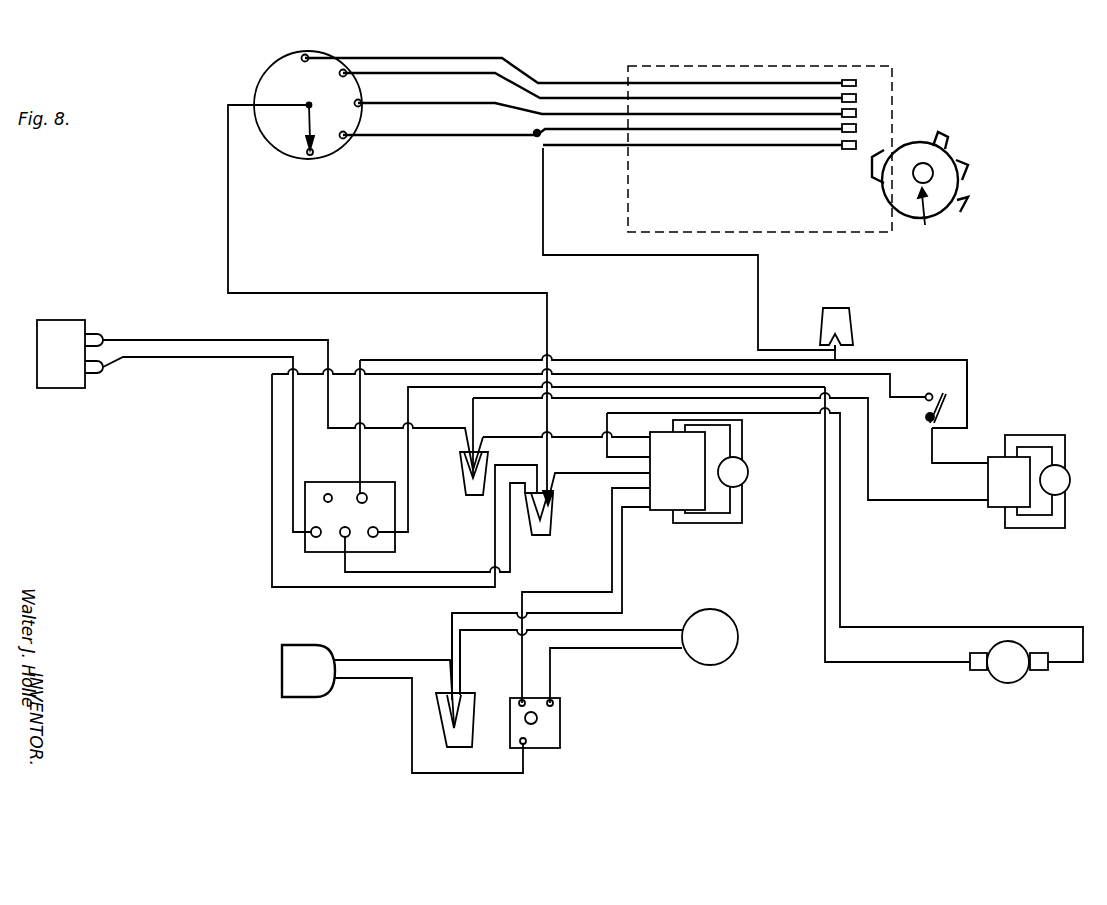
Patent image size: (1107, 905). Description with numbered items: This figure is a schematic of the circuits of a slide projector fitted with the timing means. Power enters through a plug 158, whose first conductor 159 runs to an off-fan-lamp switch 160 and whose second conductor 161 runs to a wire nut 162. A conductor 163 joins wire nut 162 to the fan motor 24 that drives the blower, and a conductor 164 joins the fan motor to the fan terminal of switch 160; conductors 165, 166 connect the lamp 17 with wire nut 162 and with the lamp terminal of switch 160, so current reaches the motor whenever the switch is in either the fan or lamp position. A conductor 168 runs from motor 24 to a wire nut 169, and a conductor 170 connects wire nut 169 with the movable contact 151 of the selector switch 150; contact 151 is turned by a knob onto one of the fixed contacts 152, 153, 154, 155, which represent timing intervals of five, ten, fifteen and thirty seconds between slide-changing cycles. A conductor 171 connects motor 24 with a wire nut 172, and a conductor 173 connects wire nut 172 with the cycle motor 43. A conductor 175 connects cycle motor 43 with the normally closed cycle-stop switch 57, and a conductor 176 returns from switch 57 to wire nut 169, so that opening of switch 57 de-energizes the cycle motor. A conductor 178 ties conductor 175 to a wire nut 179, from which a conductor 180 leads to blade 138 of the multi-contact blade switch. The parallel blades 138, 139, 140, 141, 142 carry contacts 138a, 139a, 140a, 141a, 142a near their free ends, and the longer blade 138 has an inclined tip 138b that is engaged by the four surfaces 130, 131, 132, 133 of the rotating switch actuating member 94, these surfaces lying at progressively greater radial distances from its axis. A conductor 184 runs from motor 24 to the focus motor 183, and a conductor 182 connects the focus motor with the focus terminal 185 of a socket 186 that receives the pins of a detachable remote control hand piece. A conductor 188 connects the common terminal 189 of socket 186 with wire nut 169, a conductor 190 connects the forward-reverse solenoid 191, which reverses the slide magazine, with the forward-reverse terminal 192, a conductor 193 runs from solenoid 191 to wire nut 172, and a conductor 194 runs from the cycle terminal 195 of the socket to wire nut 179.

The selector switch 150 is at (258, 78).
The movable contact 151 is at (302, 120).
The fixed contact 152 is at (350, 141).
The fixed contact 153 is at (364, 108).
The fixed contact 154 is at (350, 78).
The fixed contact 155 is at (305, 55).
The blade 138 is at (588, 150).
The blade 139 is at (532, 140).
The blade 140 is at (558, 112).
The blade 141 is at (597, 97).
The blade 142 is at (694, 81).
The contact 138a is at (860, 144).
The contact 139a is at (860, 127).
The contact 140a is at (860, 112).
The contact 141a is at (860, 97).
The contact 142a is at (860, 82).
The inclined tip 138b is at (946, 140).
The switch actuating surface 130 is at (926, 179).
The switch actuating surface 131 is at (968, 172).
The switch actuating surface 132 is at (969, 198).
The switch actuating surface 133 is at (870, 172).
The switch actuating member 94 is at (929, 221).
The conductor 170 is at (424, 292).
The conductor 180 is at (663, 257).
The forward-reverse solenoid 191 is at (68, 390).
The conductor 193 is at (218, 337).
The conductor 190 is at (213, 359).
The conductor 176 is at (890, 382).
The conductor 194 is at (635, 359).
The conductor 178 is at (970, 380).
The conductor 175 is at (931, 468).
The wire nut 179 is at (848, 327).
The cycle terminal 195 is at (367, 493).
The focus terminal 185 is at (380, 536).
The conductor 182 is at (824, 570).
The conductor 173 is at (676, 372).
The conductor 184 is at (958, 626).
The conductor 171 is at (512, 436).
The wire nut 172 is at (470, 497).
The wire nut 169 is at (549, 527).
The conductor 168 is at (580, 472).
The electric motor 24 is at (715, 524).
The conductor 164 is at (580, 592).
The conductor 163 is at (586, 614).
The socket 186 is at (345, 520).
The forward-reverse terminal 192 is at (330, 524).
The common terminal 189 is at (342, 538).
The conductor 188 is at (452, 573).
The cycle-stop switch 57 is at (925, 417).
The cycle motor 43 is at (1062, 438).
The lamp 17 is at (709, 665).
The conductor 165 is at (650, 630).
The conductor 166 is at (642, 649).
The off-fan-lamp switch 160 is at (560, 740).
The plug 158 is at (282, 673).
The second conductor 161 is at (396, 660).
The first conductor 159 is at (412, 742).
The wire nut 162 is at (460, 748).
The focus motor 183 is at (1006, 684).